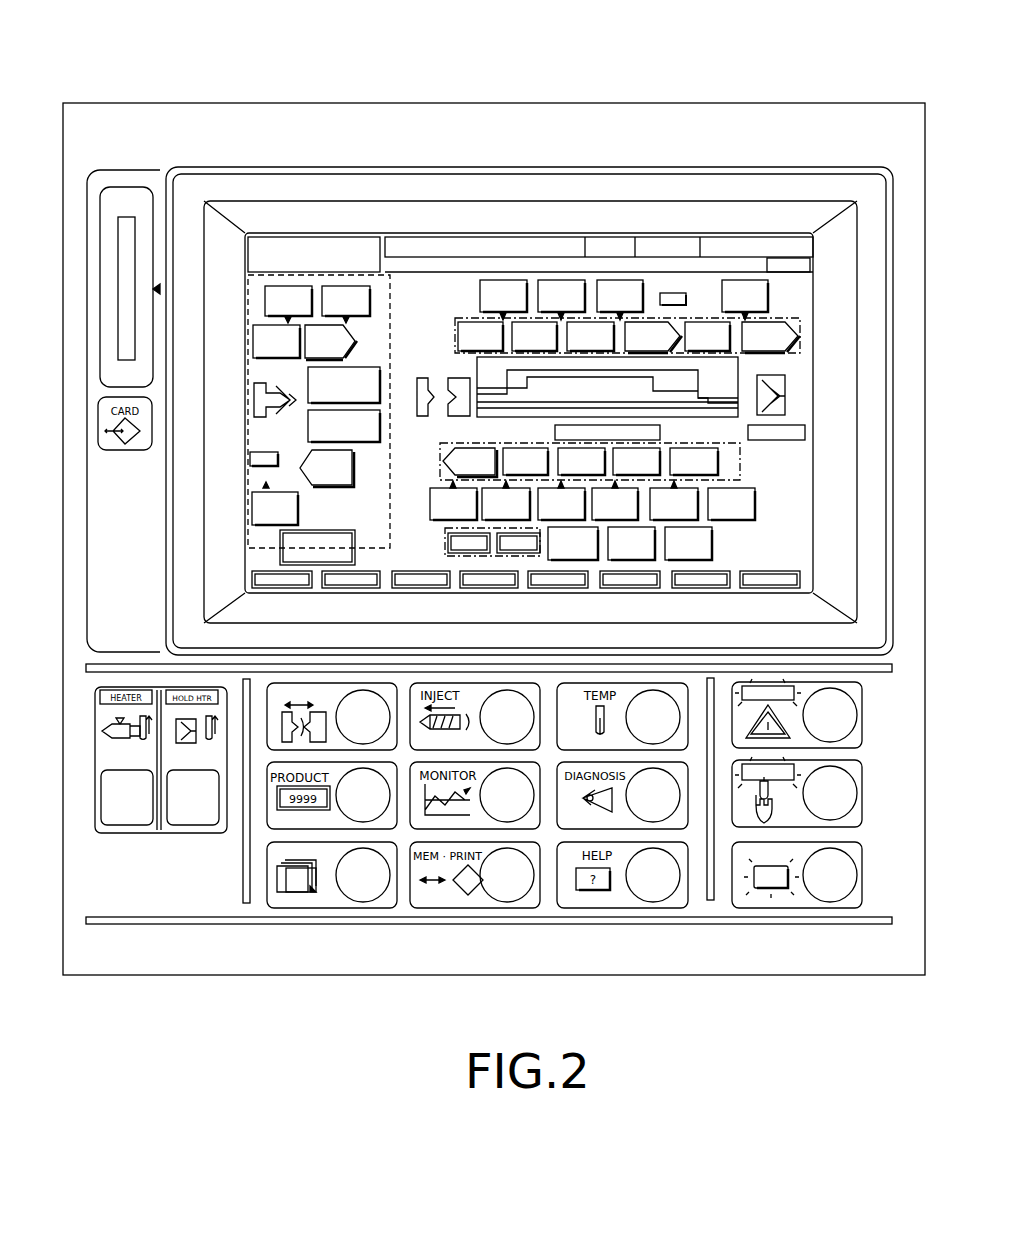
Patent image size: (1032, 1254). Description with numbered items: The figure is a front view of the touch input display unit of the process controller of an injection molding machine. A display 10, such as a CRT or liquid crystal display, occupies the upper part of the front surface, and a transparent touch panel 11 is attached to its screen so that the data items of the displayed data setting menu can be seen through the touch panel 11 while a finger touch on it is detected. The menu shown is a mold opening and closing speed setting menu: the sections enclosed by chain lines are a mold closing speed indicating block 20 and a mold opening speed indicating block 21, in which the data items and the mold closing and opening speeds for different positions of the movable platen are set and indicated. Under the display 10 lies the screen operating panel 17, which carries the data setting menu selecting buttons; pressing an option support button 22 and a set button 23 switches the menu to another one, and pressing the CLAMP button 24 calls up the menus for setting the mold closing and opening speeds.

The display 10 is at (812, 98).
The touch panel 11 is at (800, 503).
The screen operating panel 17 is at (866, 828).
The mold closing speed indicating block 20 is at (797, 318).
The mold opening speed indicating block 21 is at (740, 448).
The option support button 22 is at (332, 900).
The set button 23 is at (840, 788).
The CLAMP button 24 is at (366, 690).